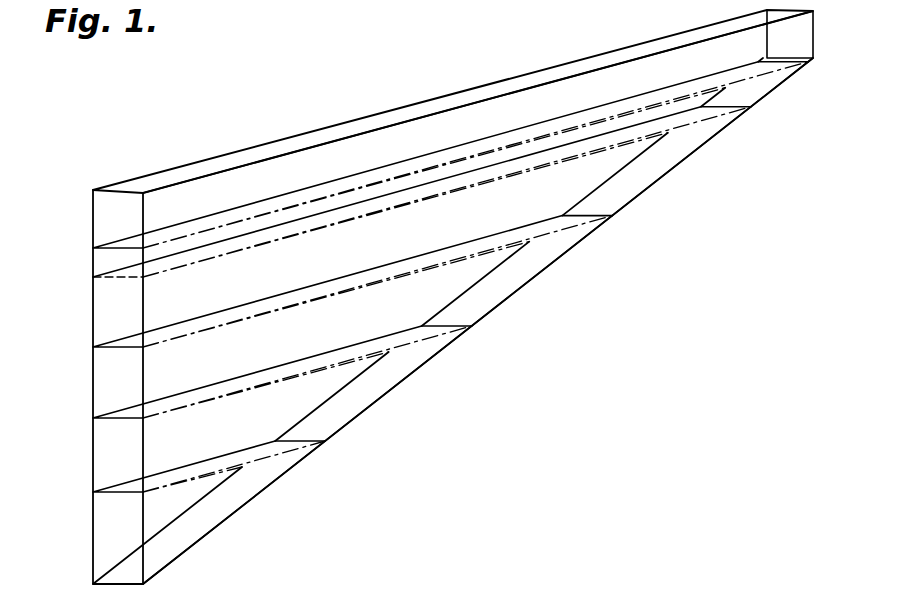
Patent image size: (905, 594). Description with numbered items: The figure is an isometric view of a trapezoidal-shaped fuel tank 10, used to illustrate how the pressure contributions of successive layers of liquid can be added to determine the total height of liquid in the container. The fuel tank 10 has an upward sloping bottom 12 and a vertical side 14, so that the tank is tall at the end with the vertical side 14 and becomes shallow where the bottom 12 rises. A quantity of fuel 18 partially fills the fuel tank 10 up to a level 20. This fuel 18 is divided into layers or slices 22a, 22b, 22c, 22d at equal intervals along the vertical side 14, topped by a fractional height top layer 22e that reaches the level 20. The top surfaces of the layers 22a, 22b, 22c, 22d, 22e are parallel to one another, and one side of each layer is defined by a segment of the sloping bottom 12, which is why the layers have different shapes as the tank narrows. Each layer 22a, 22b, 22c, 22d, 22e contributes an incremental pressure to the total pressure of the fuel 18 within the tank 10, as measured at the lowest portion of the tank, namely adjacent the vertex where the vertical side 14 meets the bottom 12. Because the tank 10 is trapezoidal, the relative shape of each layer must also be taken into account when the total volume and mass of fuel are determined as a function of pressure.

The fuel tank 10 is at (424, 297).
The upward sloping bottom 12 is at (378, 389).
The vertical side 14 is at (108, 396).
The fuel 18 is at (353, 270).
The level 20 is at (93, 222).
The layer 22a is at (104, 516).
The layer 22b is at (110, 437).
The layer 22c is at (112, 362).
The layer 22d is at (93, 277).
The fractional height top layer 22e is at (113, 248).